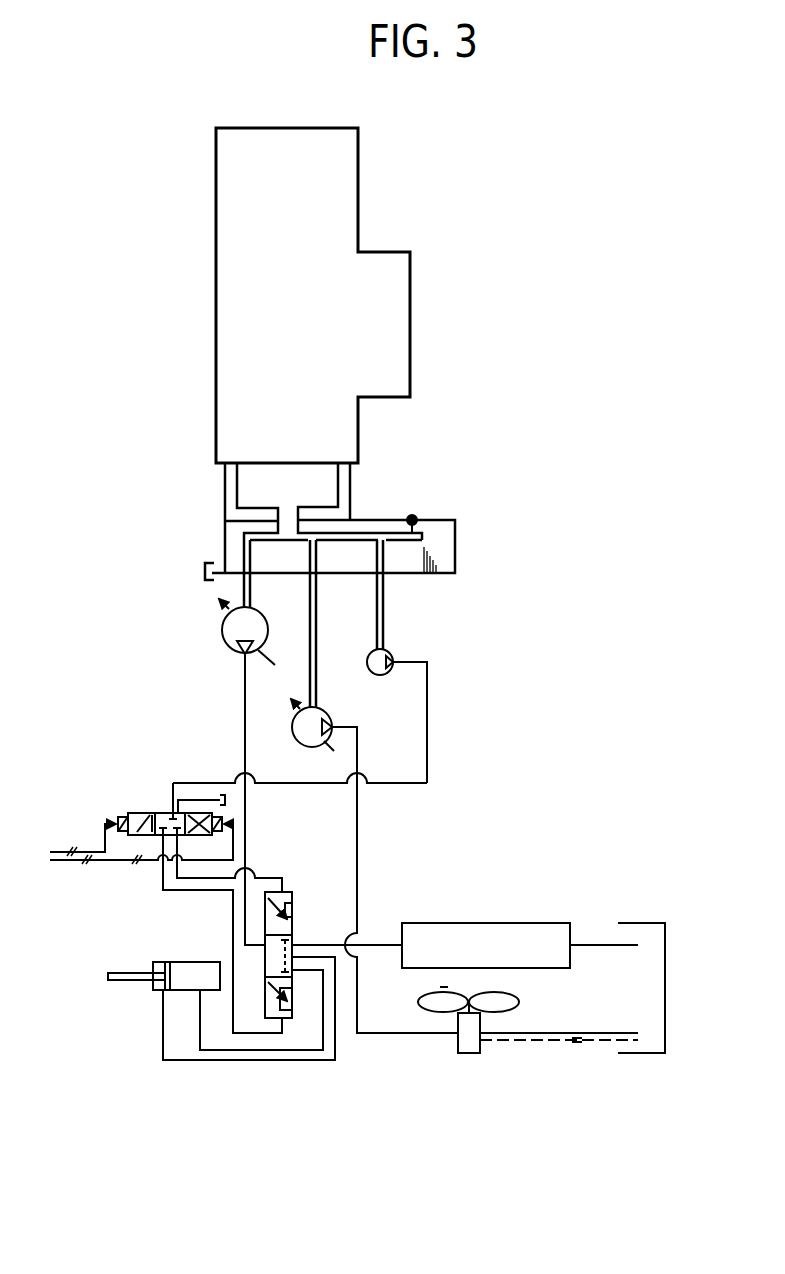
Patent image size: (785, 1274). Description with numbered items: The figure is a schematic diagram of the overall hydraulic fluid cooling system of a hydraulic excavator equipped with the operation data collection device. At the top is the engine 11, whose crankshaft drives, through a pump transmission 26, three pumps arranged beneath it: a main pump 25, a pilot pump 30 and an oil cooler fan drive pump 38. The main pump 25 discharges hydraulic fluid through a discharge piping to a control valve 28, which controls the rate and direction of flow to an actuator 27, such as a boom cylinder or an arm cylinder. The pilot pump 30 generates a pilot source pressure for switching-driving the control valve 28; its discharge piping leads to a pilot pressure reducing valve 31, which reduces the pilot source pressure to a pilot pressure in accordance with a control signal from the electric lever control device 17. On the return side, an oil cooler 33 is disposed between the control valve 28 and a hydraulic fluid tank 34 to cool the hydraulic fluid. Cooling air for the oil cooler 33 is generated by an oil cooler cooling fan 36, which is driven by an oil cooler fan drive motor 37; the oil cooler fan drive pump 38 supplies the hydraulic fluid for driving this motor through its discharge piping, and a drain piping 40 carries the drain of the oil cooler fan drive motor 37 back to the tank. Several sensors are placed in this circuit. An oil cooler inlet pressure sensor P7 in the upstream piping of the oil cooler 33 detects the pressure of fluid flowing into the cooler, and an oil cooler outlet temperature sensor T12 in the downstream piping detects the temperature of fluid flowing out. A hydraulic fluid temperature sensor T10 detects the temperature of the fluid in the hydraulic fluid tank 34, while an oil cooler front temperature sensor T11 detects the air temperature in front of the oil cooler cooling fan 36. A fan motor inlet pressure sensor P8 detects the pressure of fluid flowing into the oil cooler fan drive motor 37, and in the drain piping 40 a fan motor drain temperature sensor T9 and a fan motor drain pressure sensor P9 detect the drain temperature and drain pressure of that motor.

The engine 11 is at (358, 192).
The electric lever control device 17 is at (125, 849).
The main pump 25 is at (222, 631).
The pump transmission 26 is at (455, 545).
The actuator 27 is at (150, 987).
The control valve 28 is at (263, 963).
The pilot pump 30 is at (393, 655).
The pilot pressure reducing valve 31 is at (138, 812).
The oil cooler 33 is at (528, 923).
The hydraulic fluid tank 34 is at (665, 1038).
The oil cooler cooling fan 36 is at (520, 1002).
The oil cooler fan drive motor 37 is at (470, 1054).
The oil cooler fan drive pump 38 is at (330, 711).
The drain piping 40 is at (528, 1041).
The oil cooler inlet pressure sensor P7 is at (367, 945).
The fan motor inlet pressure sensor P8 is at (393, 1026).
The fan motor drain pressure sensor P9 is at (607, 1099).
The fan motor drain temperature sensor T9 is at (577, 1039).
The hydraulic fluid temperature sensor T10 is at (665, 995).
The oil cooler front temperature sensor T11 is at (445, 987).
The oil cooler outlet temperature sensor T12 is at (593, 945).